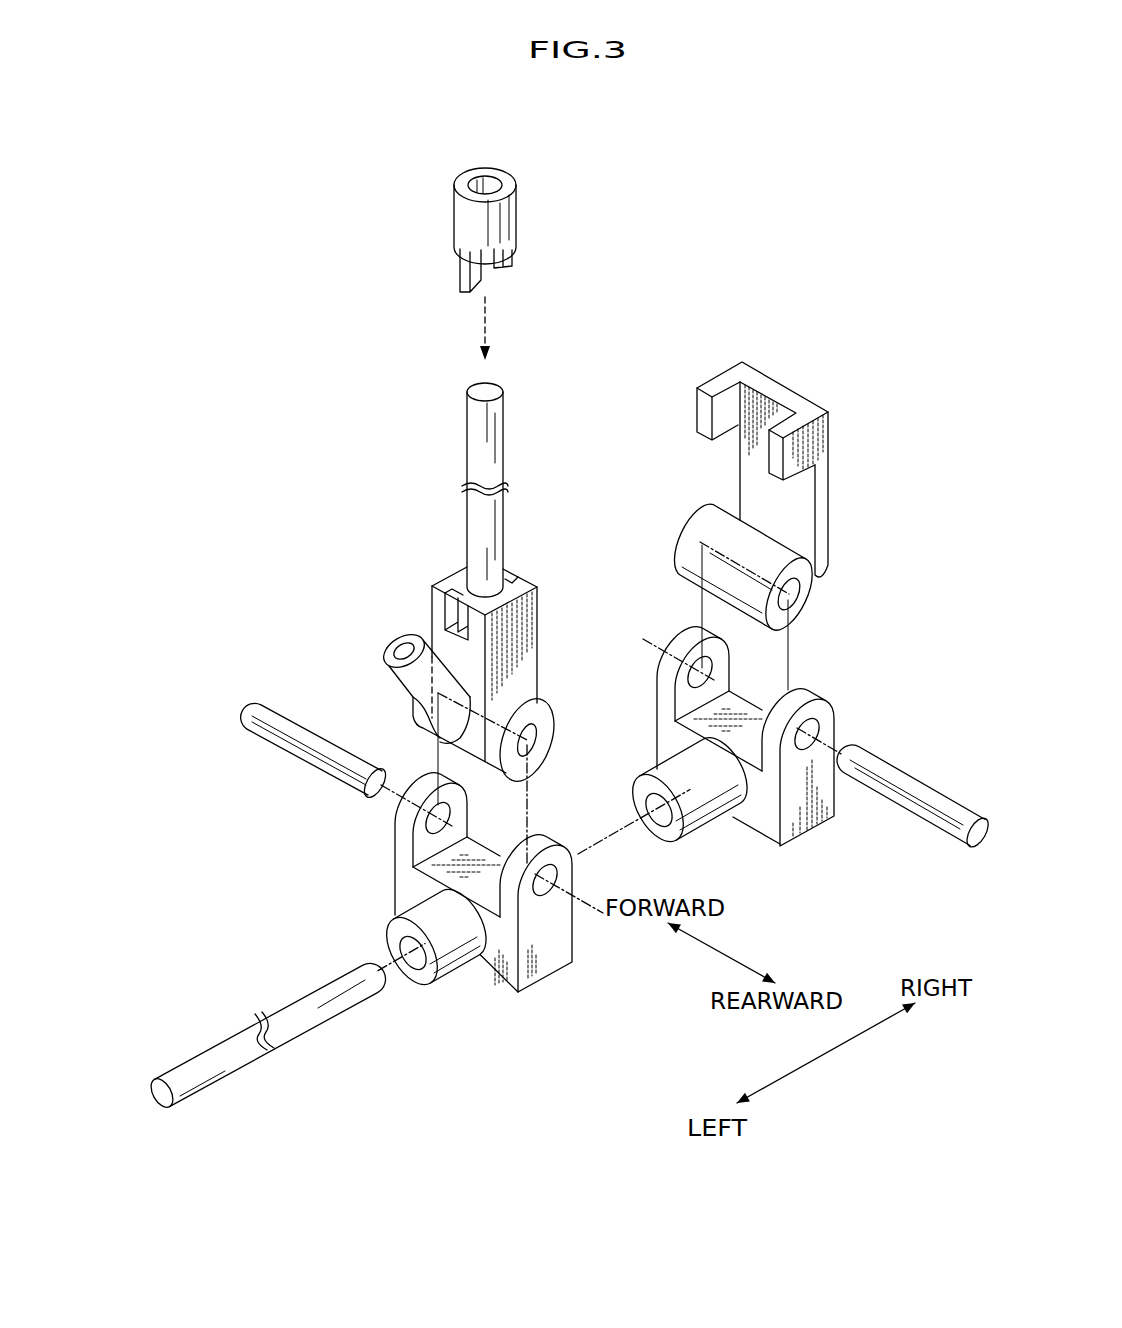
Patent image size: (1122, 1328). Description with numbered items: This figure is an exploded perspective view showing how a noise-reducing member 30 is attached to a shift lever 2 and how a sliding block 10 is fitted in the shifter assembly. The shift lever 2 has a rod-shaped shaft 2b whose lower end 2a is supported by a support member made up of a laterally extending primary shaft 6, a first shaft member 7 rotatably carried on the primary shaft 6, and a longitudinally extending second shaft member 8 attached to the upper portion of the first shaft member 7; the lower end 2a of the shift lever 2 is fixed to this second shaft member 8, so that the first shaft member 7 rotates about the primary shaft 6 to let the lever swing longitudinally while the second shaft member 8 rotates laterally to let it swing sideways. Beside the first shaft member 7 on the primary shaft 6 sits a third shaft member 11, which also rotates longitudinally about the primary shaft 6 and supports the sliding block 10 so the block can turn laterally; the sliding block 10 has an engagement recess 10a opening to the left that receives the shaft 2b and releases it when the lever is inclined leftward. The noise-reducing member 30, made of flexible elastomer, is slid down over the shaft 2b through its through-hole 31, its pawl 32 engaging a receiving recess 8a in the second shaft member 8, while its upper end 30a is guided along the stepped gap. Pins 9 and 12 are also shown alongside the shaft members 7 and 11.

The shift lever 2 is at (472, 490).
The lower end of the shift lever 2a is at (478, 587).
The shaft 2b is at (496, 468).
The primary shaft 6 is at (315, 1015).
The first shaft member 7 is at (552, 957).
The second shaft member 8 is at (475, 697).
The receiving recess 8a is at (460, 618).
The front-rear pivot pin 9 is at (275, 724).
The sliding block 10 is at (727, 526).
The engagement recess 10a is at (763, 413).
The third shaft member 11 is at (758, 812).
The second pivot pin 12 is at (925, 813).
The noise-reducing member 30 is at (488, 235).
The upper end of the noise-reducing member 30a is at (455, 180).
The through-hole 31 is at (488, 182).
The pawl 32 is at (460, 283).